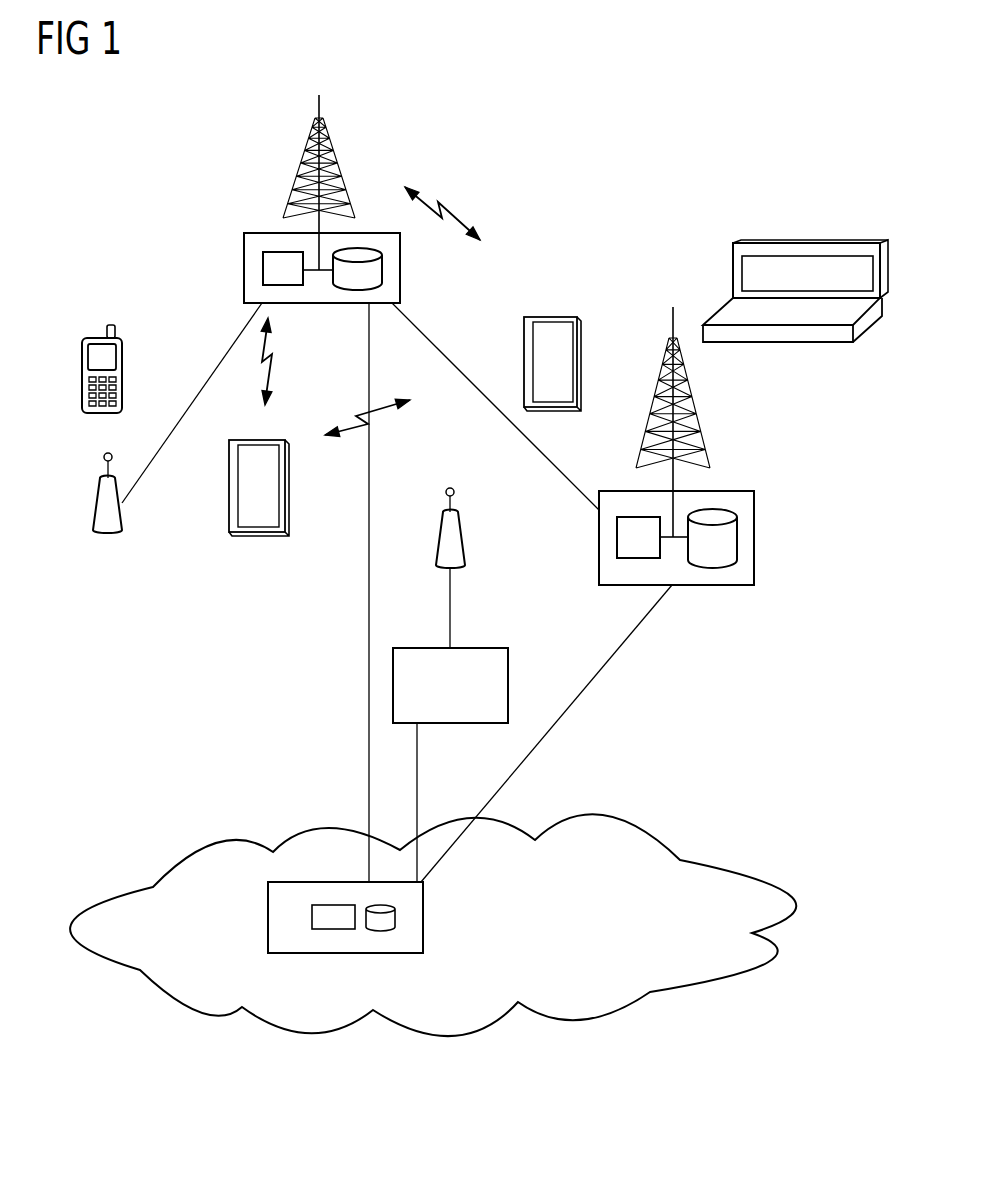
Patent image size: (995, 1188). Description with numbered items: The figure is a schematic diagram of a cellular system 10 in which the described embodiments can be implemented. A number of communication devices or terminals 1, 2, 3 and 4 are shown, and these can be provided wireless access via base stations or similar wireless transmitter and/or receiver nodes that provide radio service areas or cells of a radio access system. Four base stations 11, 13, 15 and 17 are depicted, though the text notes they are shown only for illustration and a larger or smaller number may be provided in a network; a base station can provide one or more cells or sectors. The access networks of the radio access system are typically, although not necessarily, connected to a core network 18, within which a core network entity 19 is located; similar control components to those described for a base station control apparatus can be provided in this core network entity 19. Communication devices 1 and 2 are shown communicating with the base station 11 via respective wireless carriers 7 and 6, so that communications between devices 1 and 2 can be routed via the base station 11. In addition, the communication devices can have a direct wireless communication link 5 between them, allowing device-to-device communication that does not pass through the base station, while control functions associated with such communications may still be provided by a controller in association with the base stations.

The communication system 10 is at (97, 190).
The base station 11 is at (244, 270).
The base station 13 is at (757, 531).
The communication device 1 is at (256, 535).
The communication device 2 is at (555, 318).
The communication device 3 is at (82, 375).
The communication device 4 is at (815, 240).
The direct wireless communication link 5 is at (385, 405).
The wireless carrier 6 is at (455, 208).
The wireless carrier 7 is at (272, 362).
The base station 15 is at (123, 512).
The base station 17 is at (466, 548).
The core network 18 is at (230, 840).
The core network entity 19 is at (425, 915).